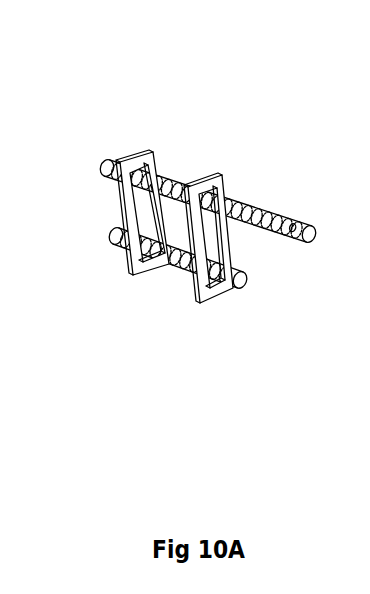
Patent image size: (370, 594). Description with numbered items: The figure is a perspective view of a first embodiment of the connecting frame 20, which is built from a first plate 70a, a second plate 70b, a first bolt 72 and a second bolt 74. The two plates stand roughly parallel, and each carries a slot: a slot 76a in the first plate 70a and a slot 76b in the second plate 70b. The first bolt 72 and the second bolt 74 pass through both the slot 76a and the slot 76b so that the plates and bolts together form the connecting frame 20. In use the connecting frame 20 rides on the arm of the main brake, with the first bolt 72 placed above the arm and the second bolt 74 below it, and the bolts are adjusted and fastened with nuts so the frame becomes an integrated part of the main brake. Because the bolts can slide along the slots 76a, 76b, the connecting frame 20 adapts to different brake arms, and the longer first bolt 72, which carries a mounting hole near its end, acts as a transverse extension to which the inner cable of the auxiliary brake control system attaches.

The connecting frame 20 is at (191, 189).
The first plate 70a is at (268, 205).
The second plate 70b is at (99, 182).
The first bolt 72 is at (266, 217).
The second bolt 74 is at (167, 258).
The slot 76a is at (210, 238).
The slot 76b is at (139, 207).